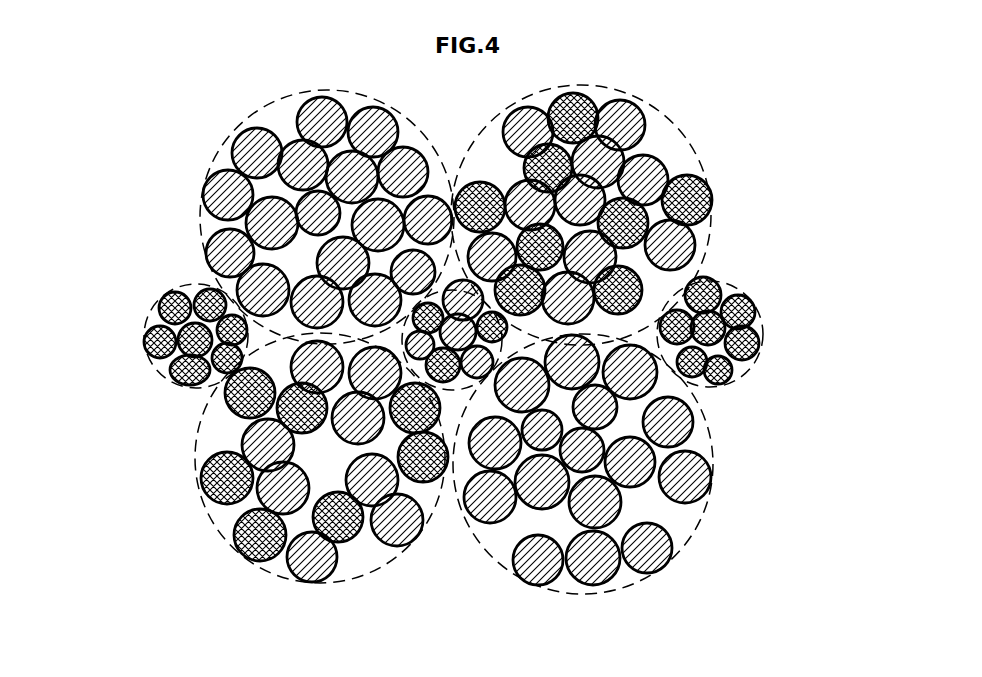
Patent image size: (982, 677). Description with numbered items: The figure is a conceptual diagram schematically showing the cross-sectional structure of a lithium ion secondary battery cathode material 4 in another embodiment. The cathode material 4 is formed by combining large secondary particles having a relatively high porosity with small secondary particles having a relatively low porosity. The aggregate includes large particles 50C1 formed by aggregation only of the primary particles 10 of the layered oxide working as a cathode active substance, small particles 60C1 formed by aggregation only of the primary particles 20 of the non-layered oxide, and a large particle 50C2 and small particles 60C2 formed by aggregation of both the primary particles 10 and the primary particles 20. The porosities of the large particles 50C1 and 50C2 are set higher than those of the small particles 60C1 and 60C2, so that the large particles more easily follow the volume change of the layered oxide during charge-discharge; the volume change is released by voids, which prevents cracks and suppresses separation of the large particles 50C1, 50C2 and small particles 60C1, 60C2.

The lithium ion secondary battery cathode material 4 is at (446, 122).
The primary particles of the layered oxide 10 is at (630, 117).
The primary particles of the non-layered oxide 20 is at (711, 212).
The large particles 50C1 is at (712, 458).
The large particle 50C2 is at (693, 148).
The small particles 60C1 is at (759, 304).
The small particles 60C2 is at (163, 372).